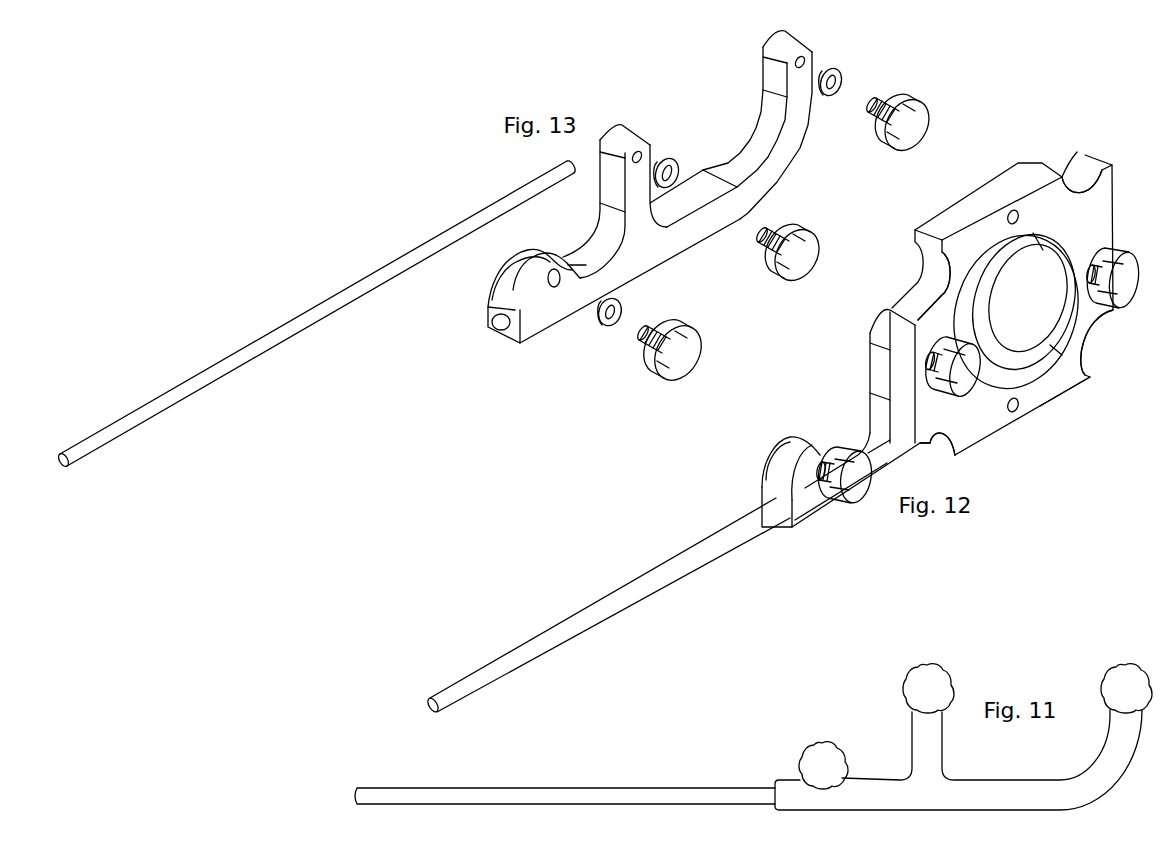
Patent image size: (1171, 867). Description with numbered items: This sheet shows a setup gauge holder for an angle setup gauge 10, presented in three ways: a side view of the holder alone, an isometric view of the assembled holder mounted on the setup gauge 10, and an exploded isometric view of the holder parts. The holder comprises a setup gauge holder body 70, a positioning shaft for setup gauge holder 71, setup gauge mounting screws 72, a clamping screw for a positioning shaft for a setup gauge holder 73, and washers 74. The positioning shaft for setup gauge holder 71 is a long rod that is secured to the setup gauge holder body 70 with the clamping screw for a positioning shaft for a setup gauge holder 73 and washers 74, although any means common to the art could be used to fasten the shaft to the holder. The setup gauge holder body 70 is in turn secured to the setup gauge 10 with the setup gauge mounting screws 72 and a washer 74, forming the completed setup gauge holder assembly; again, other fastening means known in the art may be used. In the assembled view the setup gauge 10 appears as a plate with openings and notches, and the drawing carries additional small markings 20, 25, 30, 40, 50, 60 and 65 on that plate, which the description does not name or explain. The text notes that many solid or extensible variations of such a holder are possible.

In FIG. 12, the angle setup gauge 10 is at (1103, 222).
In FIG. 12, the top notch 20 is at (1055, 177).
In FIG. 12, the side edge 25 is at (923, 310).
In FIG. 12, the side notch 30 is at (1110, 320).
In FIG. 12, the bottom notch 40 is at (957, 455).
In FIG. 12, the bottom edge 50 is at (920, 442).
In FIG. 12, the lower edge 60 is at (1082, 378).
In FIG. 12, the left notch 65 is at (942, 240).
In FIG. 13, the setup gauge holder body 70 is at (763, 137).
In FIG. 12, the setup gauge holder body 70 is at (875, 428).
In FIG. 11, the setup gauge holder body 70 is at (1080, 788).
In FIG. 13, the positioning shaft for setup gauge holder 71 is at (337, 302).
In FIG. 12, the positioning shaft for setup gauge holder 71 is at (648, 580).
In FIG. 11, the positioning shaft for setup gauge holder 71 is at (560, 797).
In FIG. 13, the setup gauge mounting screws 72 is at (877, 107).
In FIG. 12, the setup gauge mounting screws 72 is at (968, 370).
In FIG. 11, the setup gauge mounting screws 72 is at (932, 683).
In FIG. 13, the clamping screw for a positioning shaft for a setup gauge holder 73 is at (652, 328).
In FIG. 12, the clamping screw for a positioning shaft for a setup gauge holder 73 is at (853, 485).
In FIG. 11, the clamping screw for a positioning shaft for a setup gauge holder 73 is at (828, 758).
In FIG. 13, the washers 74 is at (845, 67).